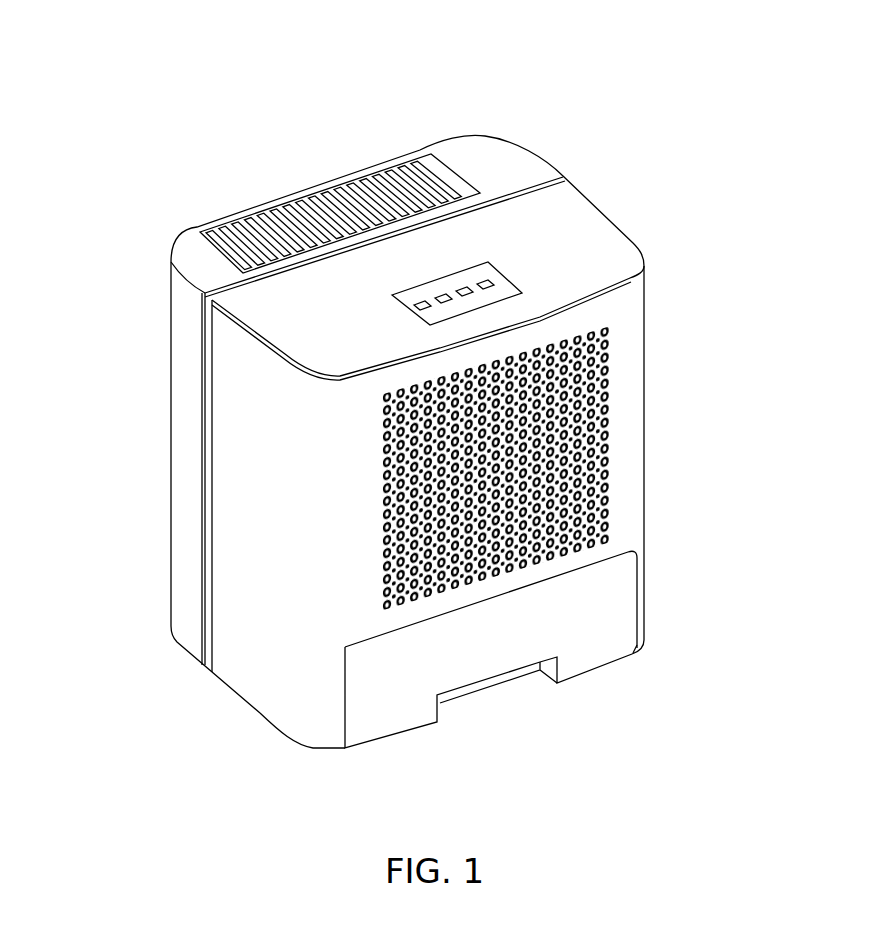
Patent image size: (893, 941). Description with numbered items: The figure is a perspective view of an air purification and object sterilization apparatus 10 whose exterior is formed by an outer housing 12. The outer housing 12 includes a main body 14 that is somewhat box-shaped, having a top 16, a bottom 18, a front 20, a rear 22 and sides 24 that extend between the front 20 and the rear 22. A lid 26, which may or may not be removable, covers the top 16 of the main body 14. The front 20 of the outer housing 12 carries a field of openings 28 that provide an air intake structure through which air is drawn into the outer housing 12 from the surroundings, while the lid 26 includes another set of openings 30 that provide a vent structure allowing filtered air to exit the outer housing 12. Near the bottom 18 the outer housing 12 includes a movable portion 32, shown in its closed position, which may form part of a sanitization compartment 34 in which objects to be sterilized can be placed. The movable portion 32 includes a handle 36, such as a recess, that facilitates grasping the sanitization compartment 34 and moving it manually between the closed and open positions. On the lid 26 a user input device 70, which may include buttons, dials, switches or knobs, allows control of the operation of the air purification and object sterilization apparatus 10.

The air purification and object sterilization apparatus 10 is at (400, 412).
The outer housing 12 is at (400, 466).
The main body 14 is at (642, 511).
The top 16 is at (173, 296).
The bottom 18 is at (313, 747).
The front 20 is at (352, 549).
The rear 22 is at (114, 480).
The sides 24 is at (215, 401).
The lid 26 is at (598, 226).
The openings 28 is at (603, 477).
The openings 30 is at (360, 183).
The movable portion 32 is at (678, 673).
The sanitization compartment 34 is at (488, 719).
The handle 36 is at (486, 684).
The user input device 70 is at (485, 260).